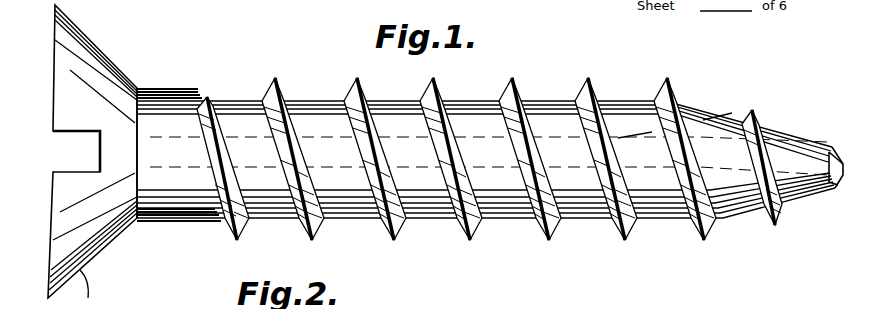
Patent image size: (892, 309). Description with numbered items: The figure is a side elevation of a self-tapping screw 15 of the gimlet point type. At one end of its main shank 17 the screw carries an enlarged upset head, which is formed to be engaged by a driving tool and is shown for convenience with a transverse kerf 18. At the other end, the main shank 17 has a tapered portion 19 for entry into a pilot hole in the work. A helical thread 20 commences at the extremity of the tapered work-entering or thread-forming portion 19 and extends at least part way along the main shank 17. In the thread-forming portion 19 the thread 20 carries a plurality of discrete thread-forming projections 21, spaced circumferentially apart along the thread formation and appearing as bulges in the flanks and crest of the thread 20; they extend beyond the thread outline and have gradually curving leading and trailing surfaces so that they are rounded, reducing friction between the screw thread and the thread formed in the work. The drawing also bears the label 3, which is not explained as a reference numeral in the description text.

The root surface between thread convolutions 3 is at (638, 132).
The screw 15 is at (512, 226).
The shank 17 is at (433, 222).
The slot 18 is at (87, 147).
The point 19 is at (797, 197).
The thread 20 is at (343, 93).
The thread convolution 21 is at (660, 125).